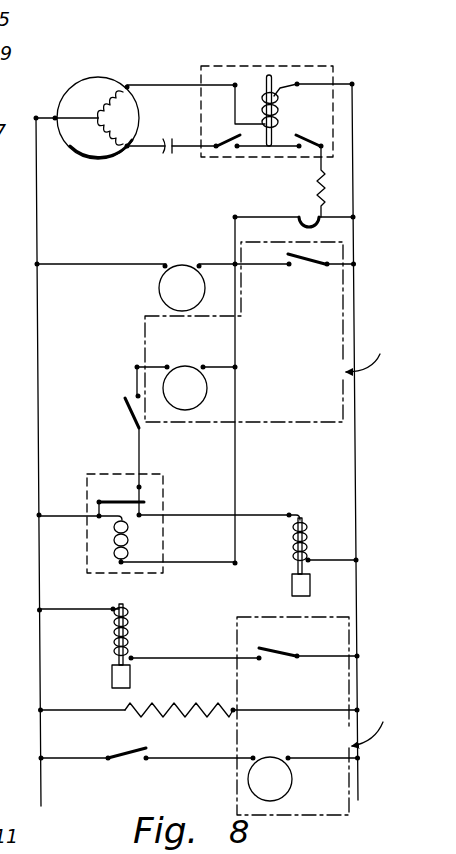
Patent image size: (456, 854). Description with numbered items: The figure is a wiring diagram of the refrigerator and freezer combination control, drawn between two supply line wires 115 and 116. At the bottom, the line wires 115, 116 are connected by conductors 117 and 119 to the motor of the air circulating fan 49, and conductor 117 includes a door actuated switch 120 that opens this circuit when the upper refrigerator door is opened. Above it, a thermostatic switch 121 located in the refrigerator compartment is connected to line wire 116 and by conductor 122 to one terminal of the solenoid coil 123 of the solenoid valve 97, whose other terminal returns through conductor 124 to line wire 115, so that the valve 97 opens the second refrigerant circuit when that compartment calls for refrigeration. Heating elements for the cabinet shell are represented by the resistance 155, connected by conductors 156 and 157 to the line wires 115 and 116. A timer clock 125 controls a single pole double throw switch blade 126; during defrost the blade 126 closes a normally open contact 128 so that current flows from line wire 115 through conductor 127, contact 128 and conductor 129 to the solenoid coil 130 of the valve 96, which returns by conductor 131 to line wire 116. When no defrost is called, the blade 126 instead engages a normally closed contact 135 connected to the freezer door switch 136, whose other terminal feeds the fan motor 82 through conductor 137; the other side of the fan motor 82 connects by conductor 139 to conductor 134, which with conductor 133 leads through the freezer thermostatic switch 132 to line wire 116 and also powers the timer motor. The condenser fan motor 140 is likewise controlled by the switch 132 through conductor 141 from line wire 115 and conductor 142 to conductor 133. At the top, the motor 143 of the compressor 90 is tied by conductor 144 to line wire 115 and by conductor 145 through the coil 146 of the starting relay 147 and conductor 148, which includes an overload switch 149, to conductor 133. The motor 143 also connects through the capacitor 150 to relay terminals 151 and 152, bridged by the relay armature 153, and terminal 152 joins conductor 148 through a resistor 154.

The compressor 90 is at (92, 85).
The motor 143 is at (103, 160).
The conductor 144 is at (48, 117).
The conductor 145 is at (161, 84).
The capacitor 150 is at (160, 155).
The terminal 151 is at (214, 149).
The terminal 152 is at (312, 140).
The relay armature 153 is at (268, 165).
The coil 146 is at (278, 86).
The starting relay 147 is at (333, 66).
The conductor 148 is at (353, 166).
The resistor 154 is at (326, 193).
The overload switch 149 is at (305, 210).
The conductor 141 is at (118, 262).
The conductor 142 is at (218, 262).
The condenser fan motor 140 is at (162, 290).
The thermostatic switch 132 is at (316, 262).
The conductor 133 is at (268, 285).
The conductor 134 is at (236, 394).
The conductor 137 is at (140, 365).
The fan motor 82 is at (184, 383).
The conductor 139 is at (217, 364).
The freezer door switch 136 is at (124, 397).
The normally closed contact 135 is at (128, 487).
The switch blade 126 is at (112, 500).
The timer clock 125 is at (200, 449).
The conductor 127 is at (72, 504).
The normally open contact 128 is at (141, 510).
The conductor 129 is at (262, 513).
The solenoid coil 130 is at (309, 528).
The conductor 131 is at (335, 559).
The solenoid valve 96 is at (292, 583).
The conductor 124 is at (84, 608).
The solenoid coil 123 is at (128, 627).
The solenoid valve 97 is at (112, 672).
The conductor 122 is at (173, 656).
The thermostatic switch 121 is at (308, 669).
The line wire 116 is at (358, 795).
The conductor 156 is at (83, 726).
The heating elements 155 is at (215, 707).
The conductor 157 is at (295, 723).
The door actuated switch 120 is at (125, 763).
The conductor 117 is at (205, 757).
The fan 49 is at (265, 780).
The conductor 119 is at (315, 750).
The line wire 115 is at (42, 790).